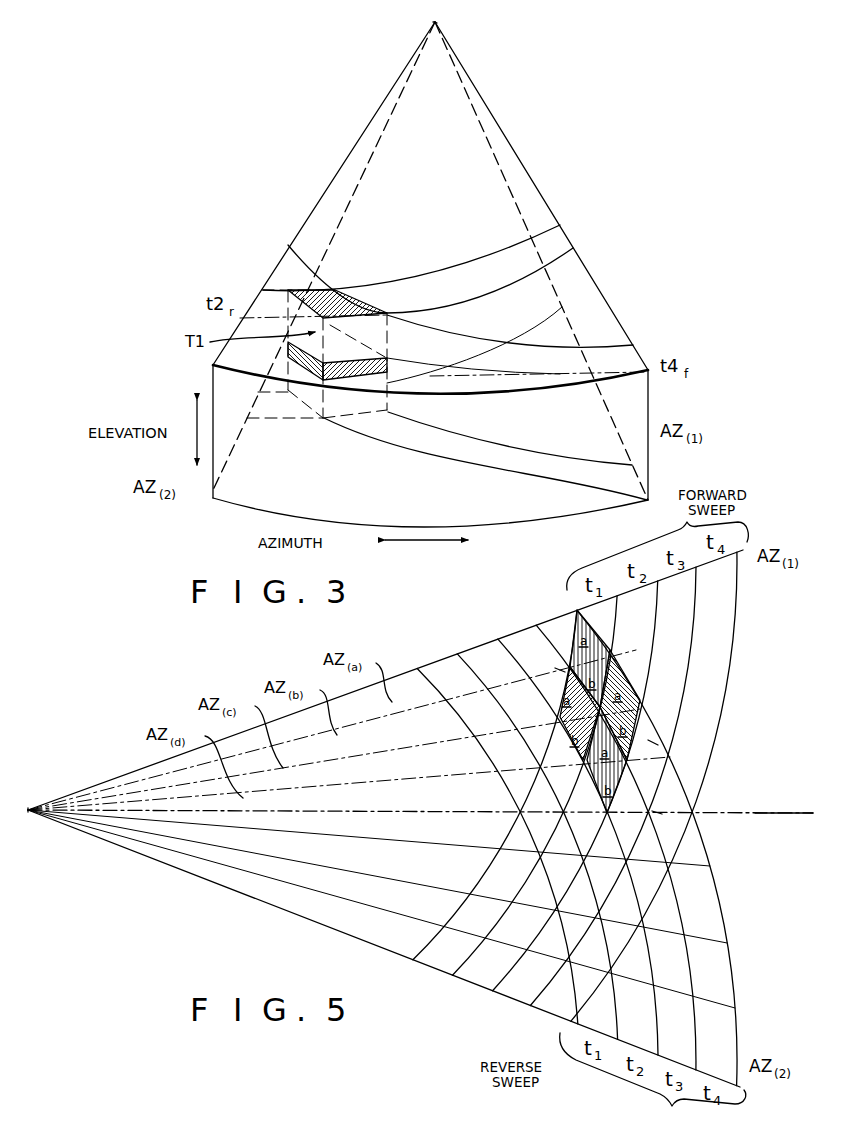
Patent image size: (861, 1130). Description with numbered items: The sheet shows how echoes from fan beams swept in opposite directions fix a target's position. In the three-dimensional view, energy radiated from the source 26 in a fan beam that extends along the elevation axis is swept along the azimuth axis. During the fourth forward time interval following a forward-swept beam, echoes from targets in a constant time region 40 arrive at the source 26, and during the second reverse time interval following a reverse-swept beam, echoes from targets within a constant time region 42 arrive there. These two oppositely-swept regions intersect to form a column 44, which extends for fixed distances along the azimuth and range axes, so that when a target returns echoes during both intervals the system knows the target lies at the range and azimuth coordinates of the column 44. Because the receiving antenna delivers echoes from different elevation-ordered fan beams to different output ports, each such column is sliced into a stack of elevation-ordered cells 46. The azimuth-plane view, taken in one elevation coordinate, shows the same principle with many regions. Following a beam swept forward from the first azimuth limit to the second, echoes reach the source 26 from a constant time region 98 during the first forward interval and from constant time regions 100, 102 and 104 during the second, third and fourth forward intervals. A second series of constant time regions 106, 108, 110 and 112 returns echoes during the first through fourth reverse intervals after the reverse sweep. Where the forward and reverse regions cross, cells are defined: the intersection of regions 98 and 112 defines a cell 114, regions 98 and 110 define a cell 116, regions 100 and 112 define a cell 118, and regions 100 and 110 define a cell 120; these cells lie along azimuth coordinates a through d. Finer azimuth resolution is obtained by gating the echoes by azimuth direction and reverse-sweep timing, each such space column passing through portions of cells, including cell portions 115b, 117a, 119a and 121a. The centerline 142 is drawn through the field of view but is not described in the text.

In FIG. 3, the source 26 is at (433, 22).
In FIG. 5, the source 26 is at (28, 808).
In FIG. 3, the constant time region 40 is at (610, 358).
In FIG. 3, the constant time region 42 is at (557, 247).
In FIG. 3, the column 44 is at (330, 297).
In FIG. 3, the cells 46 is at (290, 352).
In FIG. 5, the constant time region 98 is at (443, 950).
In FIG. 5, the constant time region 100 is at (488, 967).
In FIG. 5, the constant time region 102 is at (522, 983).
In FIG. 5, the constant time region 104 is at (557, 1000).
In FIG. 5, the constant time region 106 is at (603, 1012).
In FIG. 5, the constant time region 108 is at (630, 965).
In FIG. 5, the constant time region 110 is at (665, 940).
In FIG. 5, the constant time region 112 is at (692, 890).
In FIG. 5, the cell 114 is at (567, 688).
In FIG. 5, the cell portion 115b is at (563, 622).
In FIG. 5, the cell 116 is at (553, 680).
In FIG. 5, the cell portion 117a is at (560, 668).
In FIG. 5, the cell 118 is at (640, 702).
In FIG. 5, the cell portion 119a is at (650, 743).
In FIG. 5, the cell 120 is at (617, 778).
In FIG. 5, the cell portion 121a is at (657, 812).
In FIG. 5, the boresight axis 142 is at (762, 813).